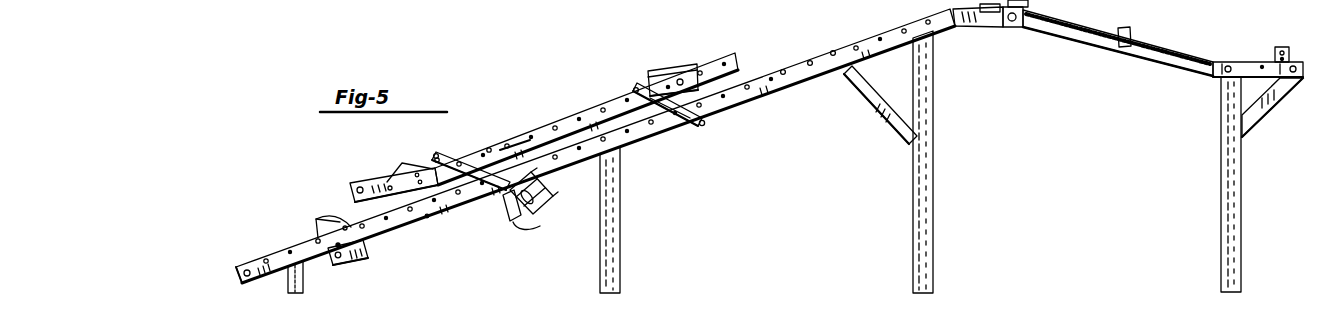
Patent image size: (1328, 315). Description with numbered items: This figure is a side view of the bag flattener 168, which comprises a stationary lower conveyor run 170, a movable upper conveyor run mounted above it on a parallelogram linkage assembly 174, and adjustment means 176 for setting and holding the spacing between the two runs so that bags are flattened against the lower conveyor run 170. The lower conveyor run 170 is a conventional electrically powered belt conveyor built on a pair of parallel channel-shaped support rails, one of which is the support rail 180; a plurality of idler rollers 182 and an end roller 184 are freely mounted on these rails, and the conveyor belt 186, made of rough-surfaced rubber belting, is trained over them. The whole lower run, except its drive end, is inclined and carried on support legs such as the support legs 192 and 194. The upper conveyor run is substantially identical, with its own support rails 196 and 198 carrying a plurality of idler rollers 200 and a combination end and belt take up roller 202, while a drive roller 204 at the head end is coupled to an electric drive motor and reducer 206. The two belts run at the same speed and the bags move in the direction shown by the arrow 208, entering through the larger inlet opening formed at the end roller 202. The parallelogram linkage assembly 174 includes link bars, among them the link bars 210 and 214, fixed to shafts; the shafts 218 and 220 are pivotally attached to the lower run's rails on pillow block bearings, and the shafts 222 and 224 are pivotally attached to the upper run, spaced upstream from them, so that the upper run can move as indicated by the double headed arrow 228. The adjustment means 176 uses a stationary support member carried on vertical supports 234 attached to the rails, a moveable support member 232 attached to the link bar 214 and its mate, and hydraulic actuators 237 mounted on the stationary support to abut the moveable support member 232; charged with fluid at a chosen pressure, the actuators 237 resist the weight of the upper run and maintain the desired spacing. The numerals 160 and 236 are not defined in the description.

The clamp assembly 160 is at (549, 181).
The bag flattener 168 is at (546, 112).
The lower conveyor run 170 is at (628, 150).
The parallelogram linkage assembly 174 is at (693, 130).
The adjustment means 176 is at (490, 240).
The support rail 180 is at (272, 276).
The idler rollers 182 is at (321, 218).
The end roller 184 is at (255, 233).
The conveyor belt 186 is at (777, 91).
The support leg 192 is at (621, 247).
The support leg 194 is at (933, 238).
The support rail 196 is at (347, 262).
The support rail 198 is at (489, 146).
The idler rollers 200 is at (407, 158).
The combination end and belt take up roller 202 is at (349, 183).
The drive roller 204 is at (698, 73).
The electric drive motor and reducer 206 is at (672, 70).
The arrow 208 is at (506, 150).
The link bar 210 is at (688, 127).
The link bar 214 is at (425, 220).
The shaft 218 is at (707, 124).
The shaft 220 is at (497, 198).
The shaft 222 is at (635, 87).
The shaft 224 is at (440, 158).
The double headed arrow 228 is at (600, 85).
The moveable support member 232 is at (515, 222).
The vertical supports 234 is at (550, 197).
The rod 236 is at (511, 189).
The hydraulic actuators 237 is at (540, 222).